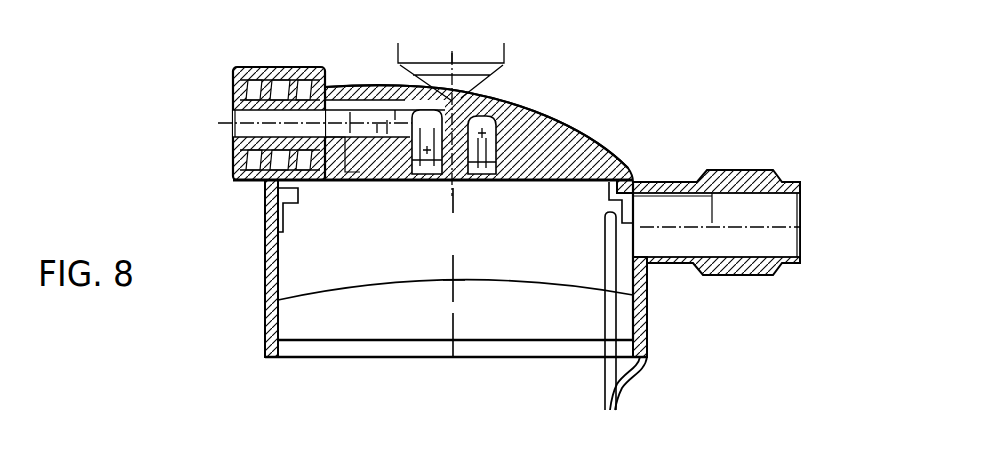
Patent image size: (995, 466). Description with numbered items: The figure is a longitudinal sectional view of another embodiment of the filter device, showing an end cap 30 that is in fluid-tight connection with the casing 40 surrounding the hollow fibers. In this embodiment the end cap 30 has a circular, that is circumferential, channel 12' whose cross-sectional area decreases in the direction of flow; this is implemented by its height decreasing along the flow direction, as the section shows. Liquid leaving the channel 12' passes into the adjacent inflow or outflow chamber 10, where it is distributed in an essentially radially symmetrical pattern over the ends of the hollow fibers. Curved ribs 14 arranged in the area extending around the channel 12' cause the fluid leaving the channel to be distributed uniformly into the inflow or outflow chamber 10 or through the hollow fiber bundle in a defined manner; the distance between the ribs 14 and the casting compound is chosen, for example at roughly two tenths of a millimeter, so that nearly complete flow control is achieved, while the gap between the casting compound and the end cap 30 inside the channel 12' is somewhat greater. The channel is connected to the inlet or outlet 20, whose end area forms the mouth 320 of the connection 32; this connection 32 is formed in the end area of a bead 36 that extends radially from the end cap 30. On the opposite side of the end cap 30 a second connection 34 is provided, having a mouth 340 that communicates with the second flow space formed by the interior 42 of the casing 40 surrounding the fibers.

The inflow or outflow chamber 10 is at (482, 181).
The circumferential channel 12' is at (419, 173).
The curved ribs 14 is at (353, 182).
The inlet or outlet 20 is at (364, 104).
The end cap 30 is at (265, 300).
The connection 32 is at (268, 67).
The connection 34 is at (765, 170).
The bead 36 is at (548, 122).
The casing 40 is at (618, 396).
The interior of the casing 42 is at (471, 406).
The mouth 320 is at (233, 123).
The mouth 340 is at (803, 203).